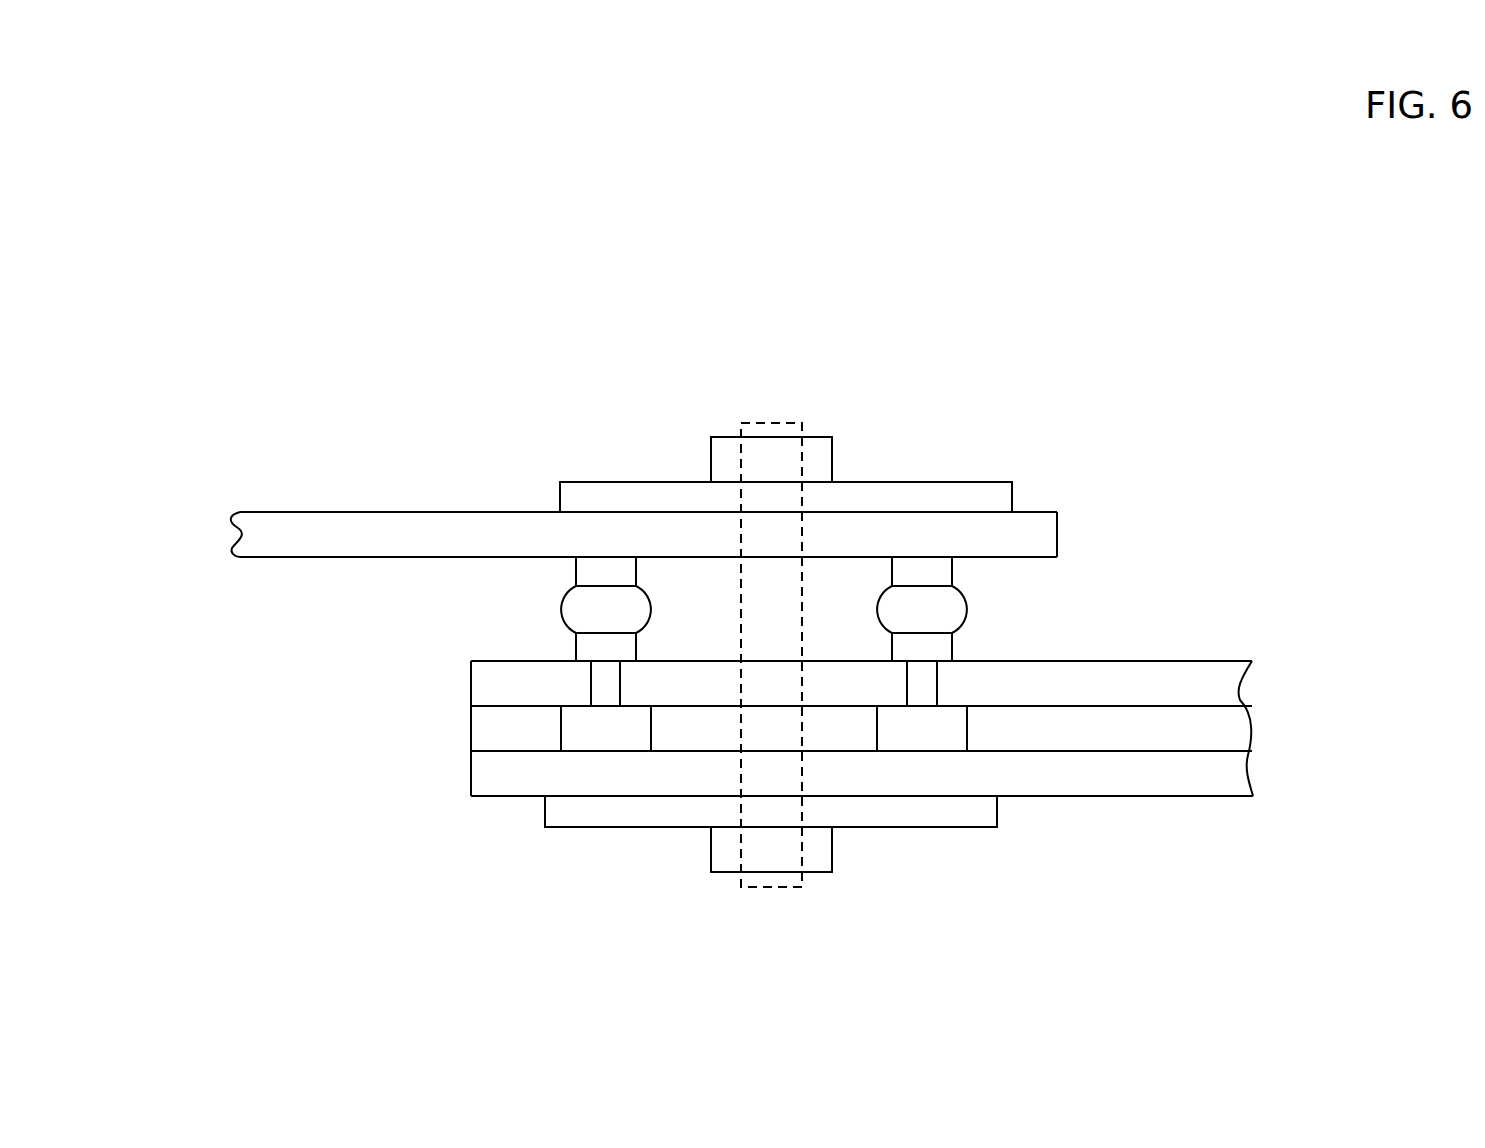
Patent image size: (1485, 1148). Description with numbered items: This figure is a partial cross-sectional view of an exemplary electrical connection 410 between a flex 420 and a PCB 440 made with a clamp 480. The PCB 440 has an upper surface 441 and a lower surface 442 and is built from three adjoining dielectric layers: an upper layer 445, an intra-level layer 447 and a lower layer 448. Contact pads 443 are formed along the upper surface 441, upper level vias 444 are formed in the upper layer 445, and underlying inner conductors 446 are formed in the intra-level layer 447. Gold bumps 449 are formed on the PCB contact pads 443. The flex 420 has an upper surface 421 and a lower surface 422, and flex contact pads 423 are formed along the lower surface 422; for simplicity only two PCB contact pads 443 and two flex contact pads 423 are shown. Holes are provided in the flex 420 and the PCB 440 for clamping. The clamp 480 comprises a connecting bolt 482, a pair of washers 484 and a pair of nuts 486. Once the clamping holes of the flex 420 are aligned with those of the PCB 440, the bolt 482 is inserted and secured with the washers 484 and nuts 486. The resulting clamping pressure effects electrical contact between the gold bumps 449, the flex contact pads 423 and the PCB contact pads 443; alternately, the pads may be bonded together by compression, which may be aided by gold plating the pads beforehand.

The electronic assembly 410 is at (158, 187).
The flex 420 is at (275, 526).
The upper surface 421 is at (302, 511).
The lower surface 422 is at (335, 560).
The flex contact pads 423 is at (590, 570).
The PCB 440 is at (455, 662).
The upper surface 441 is at (1210, 662).
The lower surface 442 is at (1193, 798).
The contact pads 443 is at (937, 647).
The upper level vias 444 is at (937, 675).
The upper layer 445 is at (672, 699).
The inner conductors 446 is at (583, 744).
The intra-level layer 447 is at (1094, 744).
The lower layer 448 is at (1001, 789).
The gold bumps 449 is at (584, 625).
The clamp 480 is at (808, 368).
The connecting bolt 482 is at (757, 422).
The washers 484 is at (997, 498).
The nuts 486 is at (824, 432).